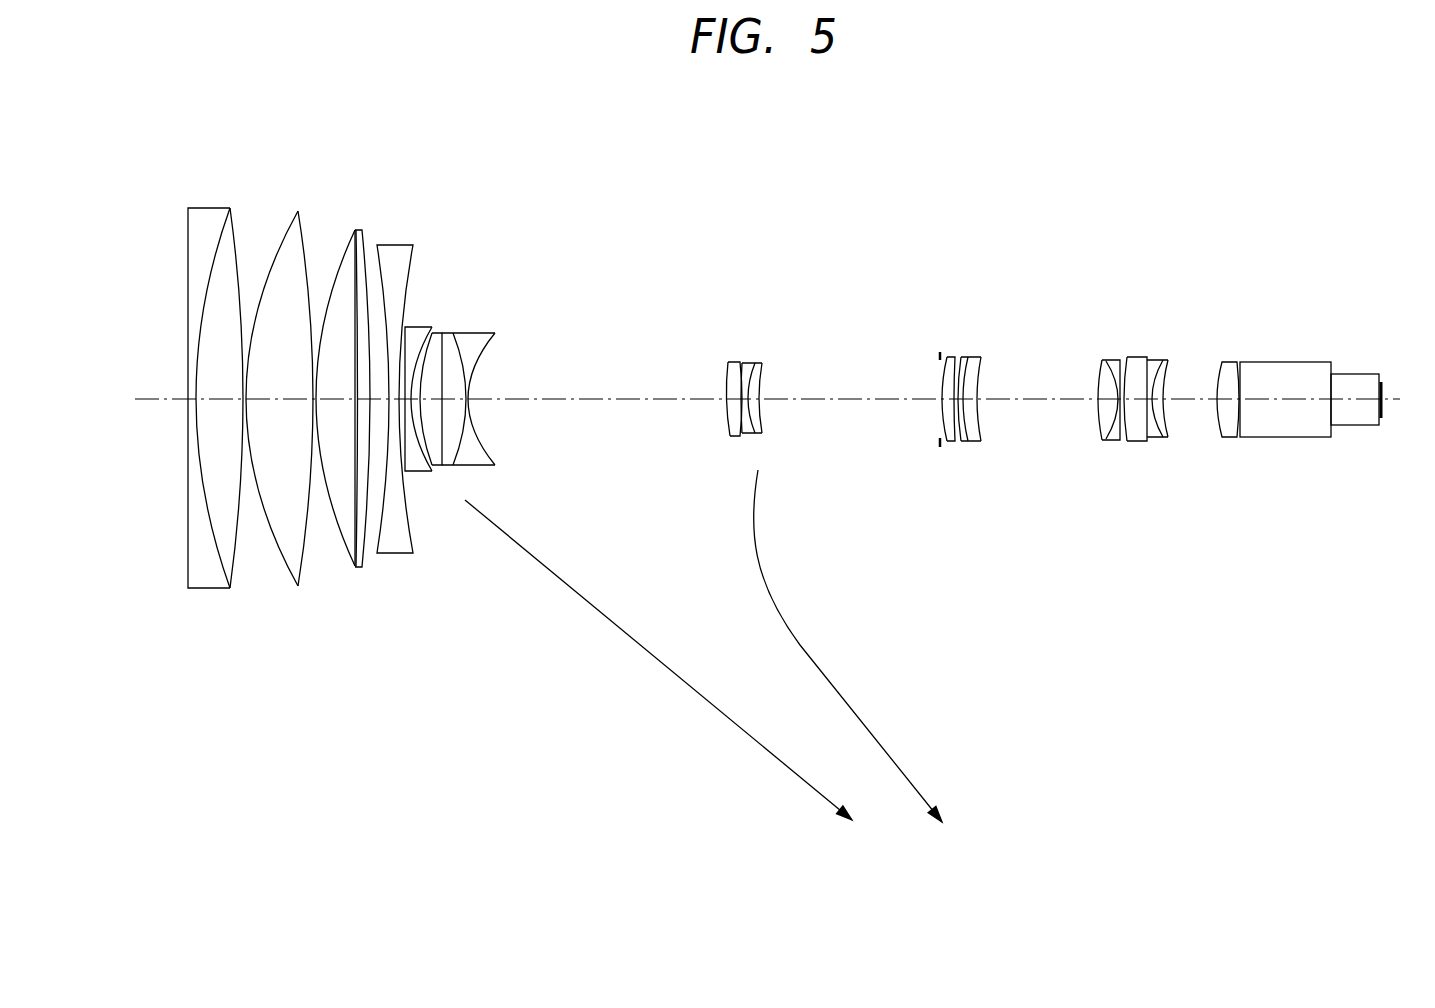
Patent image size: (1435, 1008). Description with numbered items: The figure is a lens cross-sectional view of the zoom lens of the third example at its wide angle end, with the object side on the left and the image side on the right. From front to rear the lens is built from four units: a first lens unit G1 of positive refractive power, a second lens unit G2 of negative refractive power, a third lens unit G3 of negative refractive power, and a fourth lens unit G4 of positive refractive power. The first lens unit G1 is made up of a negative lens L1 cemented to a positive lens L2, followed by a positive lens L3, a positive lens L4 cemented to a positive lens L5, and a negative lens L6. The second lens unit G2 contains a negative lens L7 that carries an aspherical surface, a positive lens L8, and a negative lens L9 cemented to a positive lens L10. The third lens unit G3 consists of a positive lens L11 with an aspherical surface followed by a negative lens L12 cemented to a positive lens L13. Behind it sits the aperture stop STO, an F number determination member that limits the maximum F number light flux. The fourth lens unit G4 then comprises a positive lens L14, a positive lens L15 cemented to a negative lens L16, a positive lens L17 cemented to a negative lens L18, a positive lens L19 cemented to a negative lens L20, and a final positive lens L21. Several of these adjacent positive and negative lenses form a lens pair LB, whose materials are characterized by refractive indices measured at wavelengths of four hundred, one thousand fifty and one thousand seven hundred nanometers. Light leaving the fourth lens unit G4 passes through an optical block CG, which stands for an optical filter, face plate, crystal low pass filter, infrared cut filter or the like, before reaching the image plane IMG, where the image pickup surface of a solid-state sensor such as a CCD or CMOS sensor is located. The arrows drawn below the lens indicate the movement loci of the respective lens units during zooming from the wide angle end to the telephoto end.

The first lens unit G1 is at (438, 56).
The second lens unit G2 is at (538, 713).
The third lens unit G3 is at (832, 222).
The fourth lens unit G4 is at (1317, 608).
The lens pair LB is at (250, 113).
The negative lens L1 is at (207, 215).
The positive lens L2 is at (237, 237).
The positive lens L3 is at (287, 248).
The positive lens L4 is at (330, 253).
The positive lens L5 is at (362, 252).
The negative lens L6 is at (395, 260).
The negative lens L7 is at (411, 447).
The positive lens L8 is at (428, 426).
The negative lens L9 is at (458, 447).
The positive lens L10 is at (483, 427).
The positive lens L11 is at (732, 364).
The negative lens L12 is at (755, 363).
The positive lens L13 is at (760, 381).
The positive lens L14 is at (953, 423).
The positive lens L15 is at (962, 425).
The negative lens L16 is at (975, 433).
The positive lens L17 is at (1103, 420).
The negative lens L18 is at (1117, 433).
The positive lens L19 is at (1138, 427).
The negative lens L20 is at (1157, 433).
The positive lens L21 is at (1232, 425).
The aperture stop STO is at (940, 353).
The optical block CG is at (1347, 380).
The image plane IMG is at (1382, 385).